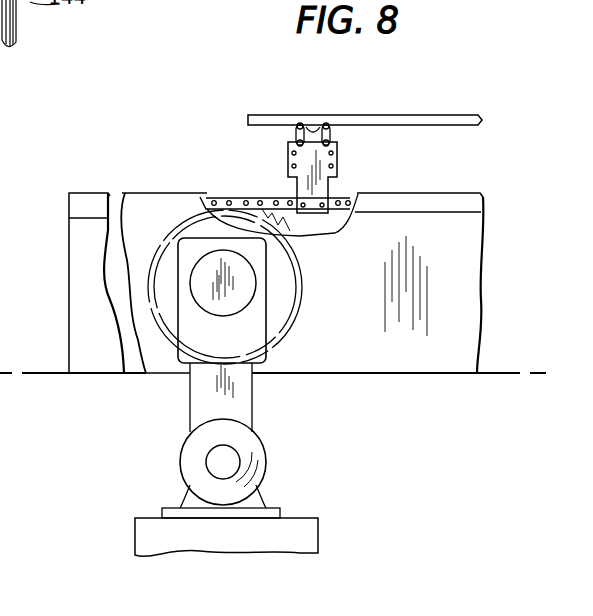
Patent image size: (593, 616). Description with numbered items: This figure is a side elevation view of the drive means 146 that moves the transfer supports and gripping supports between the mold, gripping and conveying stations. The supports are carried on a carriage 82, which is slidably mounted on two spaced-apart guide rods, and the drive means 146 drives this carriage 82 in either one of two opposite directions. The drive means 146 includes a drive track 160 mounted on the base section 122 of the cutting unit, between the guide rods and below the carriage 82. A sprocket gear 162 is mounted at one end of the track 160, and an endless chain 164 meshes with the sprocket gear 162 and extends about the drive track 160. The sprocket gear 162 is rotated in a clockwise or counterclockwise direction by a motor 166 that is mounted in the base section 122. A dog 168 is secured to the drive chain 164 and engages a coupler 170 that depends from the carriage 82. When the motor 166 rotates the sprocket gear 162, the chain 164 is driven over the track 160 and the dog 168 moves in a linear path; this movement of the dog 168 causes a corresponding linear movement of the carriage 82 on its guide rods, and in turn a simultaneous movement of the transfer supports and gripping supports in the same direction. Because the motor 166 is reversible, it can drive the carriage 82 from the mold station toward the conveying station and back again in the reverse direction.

The carriage 82 is at (394, 116).
The base section 122 is at (40, 374).
The drive means 146 is at (89, 179).
The drive track 160 is at (152, 193).
The sprocket gear 162 is at (270, 198).
The endless chain 164 is at (368, 196).
The motor 166 is at (250, 444).
The dog 168 is at (338, 157).
The coupler 170 is at (314, 126).